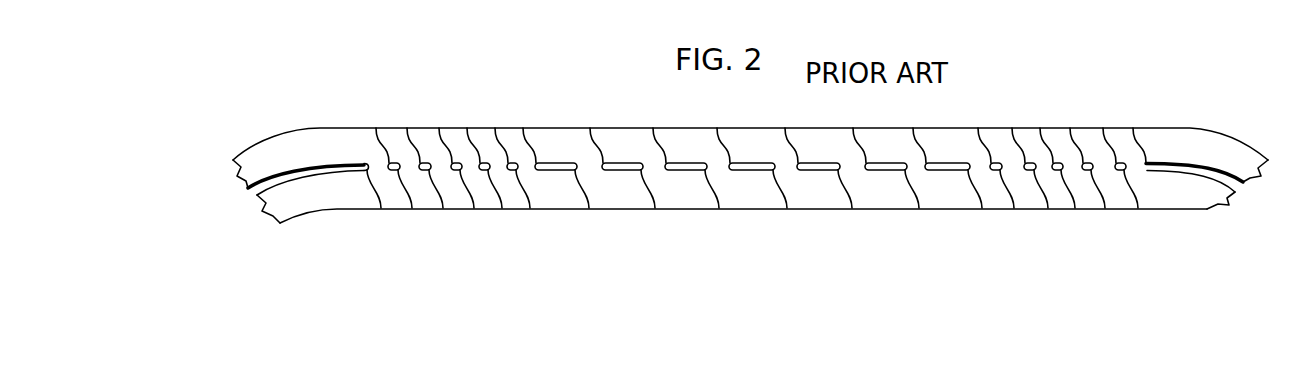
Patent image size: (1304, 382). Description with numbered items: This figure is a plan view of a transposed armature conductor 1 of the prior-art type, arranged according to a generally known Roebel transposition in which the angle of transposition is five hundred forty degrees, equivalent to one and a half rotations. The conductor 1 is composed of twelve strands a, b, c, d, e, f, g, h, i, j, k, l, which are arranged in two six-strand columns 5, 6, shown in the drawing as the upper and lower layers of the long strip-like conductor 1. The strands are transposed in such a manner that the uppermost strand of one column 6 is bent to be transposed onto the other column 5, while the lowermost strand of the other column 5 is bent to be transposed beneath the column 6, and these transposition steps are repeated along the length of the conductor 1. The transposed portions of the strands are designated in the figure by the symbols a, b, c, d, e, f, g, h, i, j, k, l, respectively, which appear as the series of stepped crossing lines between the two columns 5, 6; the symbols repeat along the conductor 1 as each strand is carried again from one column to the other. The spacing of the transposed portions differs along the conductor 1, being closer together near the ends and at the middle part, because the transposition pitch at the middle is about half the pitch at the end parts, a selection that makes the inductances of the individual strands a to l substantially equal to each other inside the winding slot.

The armature conductor 1 is at (750, 217).
The six-strand column 5 is at (338, 210).
The six-strand column 6 is at (318, 128).
The strand a is at (947, 168).
The strand b is at (886, 168).
The strand c is at (818, 168).
The strand d is at (752, 168).
The strand e is at (686, 168).
The strand f is at (622, 168).
The strand g is at (832, 168).
The strand h is at (816, 168).
The strand i is at (786, 168).
The strand j is at (757, 168).
The strand k is at (727, 168).
The strand l is at (695, 168).